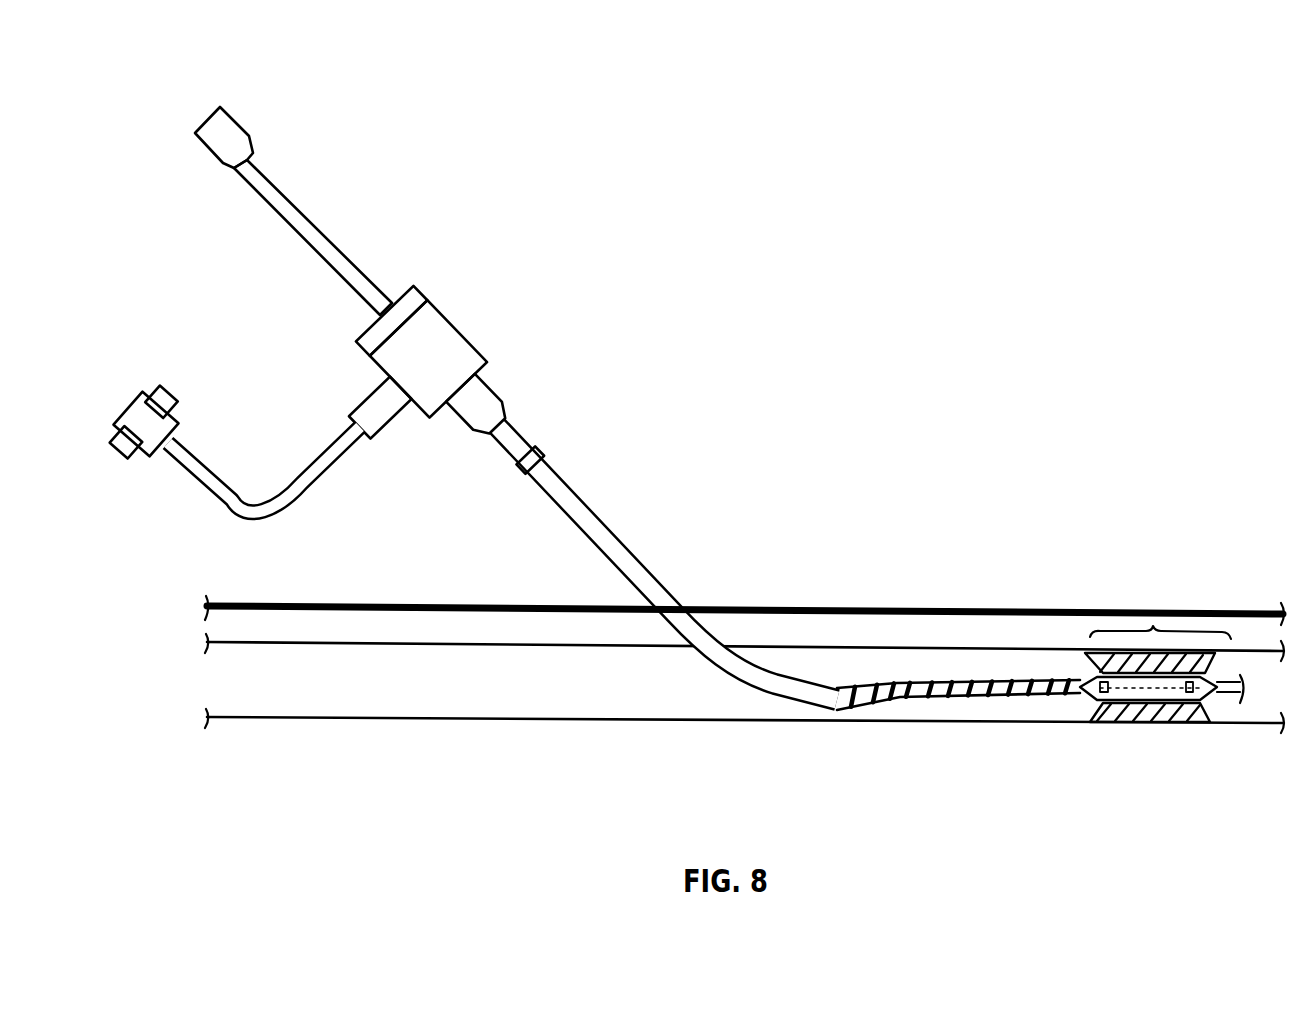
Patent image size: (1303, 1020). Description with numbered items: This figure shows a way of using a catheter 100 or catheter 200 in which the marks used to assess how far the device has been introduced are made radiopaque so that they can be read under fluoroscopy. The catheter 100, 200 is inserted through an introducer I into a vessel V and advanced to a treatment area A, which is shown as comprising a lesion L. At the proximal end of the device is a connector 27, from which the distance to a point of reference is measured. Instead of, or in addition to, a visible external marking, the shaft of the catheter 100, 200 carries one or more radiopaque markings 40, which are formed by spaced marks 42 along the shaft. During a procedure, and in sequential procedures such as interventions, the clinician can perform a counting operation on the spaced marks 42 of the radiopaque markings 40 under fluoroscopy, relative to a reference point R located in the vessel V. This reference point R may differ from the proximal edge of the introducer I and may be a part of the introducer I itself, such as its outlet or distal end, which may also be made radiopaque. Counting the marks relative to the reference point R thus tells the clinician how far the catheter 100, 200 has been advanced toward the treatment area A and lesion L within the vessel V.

The connector 27 is at (238, 118).
The catheter 100 is at (677, 415).
The catheter 200 is at (677, 415).
The introducer I is at (460, 324).
The reference point R is at (840, 688).
The radiopaque markings 40 is at (905, 717).
The spaced marks 42 is at (970, 693).
The treatment area A is at (1160, 603).
The lesion L is at (1150, 713).
The vessel V is at (408, 722).